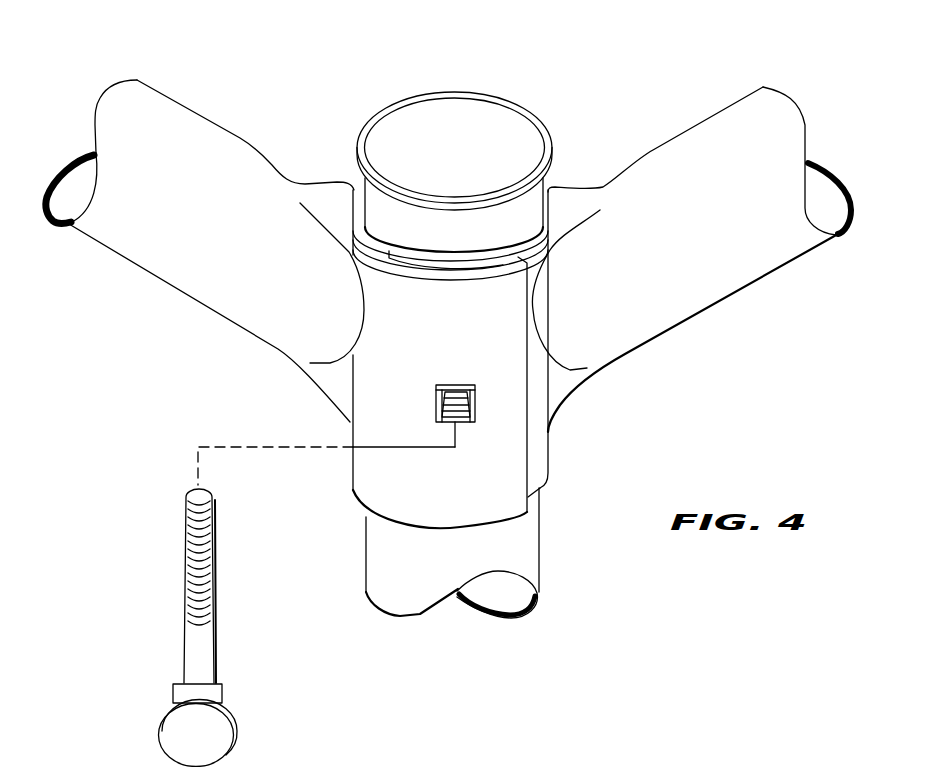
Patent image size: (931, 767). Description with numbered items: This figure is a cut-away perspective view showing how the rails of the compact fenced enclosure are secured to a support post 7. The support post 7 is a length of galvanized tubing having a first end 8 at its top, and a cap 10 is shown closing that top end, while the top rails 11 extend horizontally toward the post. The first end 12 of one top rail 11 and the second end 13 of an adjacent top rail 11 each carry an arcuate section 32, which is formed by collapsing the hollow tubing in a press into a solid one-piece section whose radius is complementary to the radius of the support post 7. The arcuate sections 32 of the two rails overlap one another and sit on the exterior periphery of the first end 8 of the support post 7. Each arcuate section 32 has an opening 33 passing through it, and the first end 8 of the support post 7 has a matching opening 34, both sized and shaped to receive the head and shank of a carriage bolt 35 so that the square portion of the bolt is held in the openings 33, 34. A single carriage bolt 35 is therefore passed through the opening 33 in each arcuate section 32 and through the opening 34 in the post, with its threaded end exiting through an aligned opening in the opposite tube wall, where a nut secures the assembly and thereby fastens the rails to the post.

The support post 7 is at (487, 593).
The first end 8 is at (517, 555).
The cap 10 is at (462, 110).
The top rail 11 is at (72, 192).
The first end 12 is at (207, 290).
The second end 13 is at (587, 343).
The arcuate section 32 is at (366, 470).
The opening 33 is at (462, 417).
The opening 34 is at (458, 393).
The carriage bolt 35 is at (210, 735).